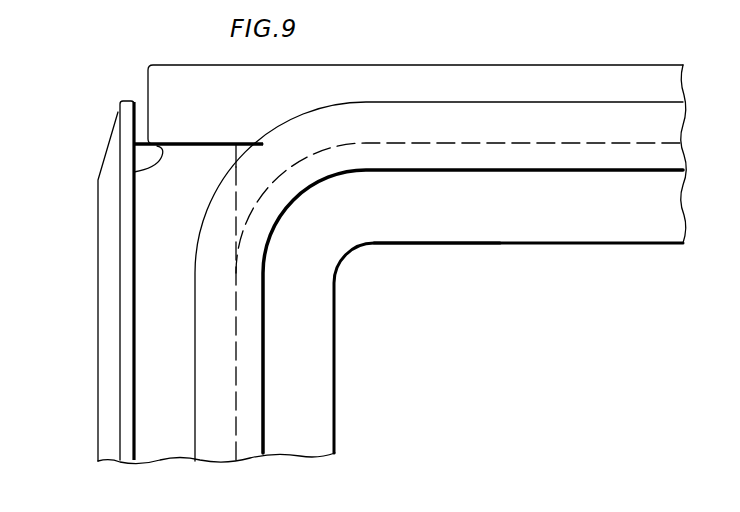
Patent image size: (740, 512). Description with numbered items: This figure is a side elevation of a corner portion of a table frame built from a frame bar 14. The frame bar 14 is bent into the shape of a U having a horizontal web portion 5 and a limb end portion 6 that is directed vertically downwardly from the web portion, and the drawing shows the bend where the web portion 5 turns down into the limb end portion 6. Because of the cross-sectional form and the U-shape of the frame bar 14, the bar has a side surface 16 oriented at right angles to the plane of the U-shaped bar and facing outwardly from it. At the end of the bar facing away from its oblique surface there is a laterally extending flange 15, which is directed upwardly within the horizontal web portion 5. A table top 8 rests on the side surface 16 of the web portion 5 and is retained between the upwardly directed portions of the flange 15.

The horizontal web portion 5 is at (558, 228).
The limb end portion 6 is at (318, 372).
The table top 8 is at (542, 70).
The frame bar 14 is at (461, 245).
The flange 15 is at (128, 100).
The side surface 16 is at (133, 172).